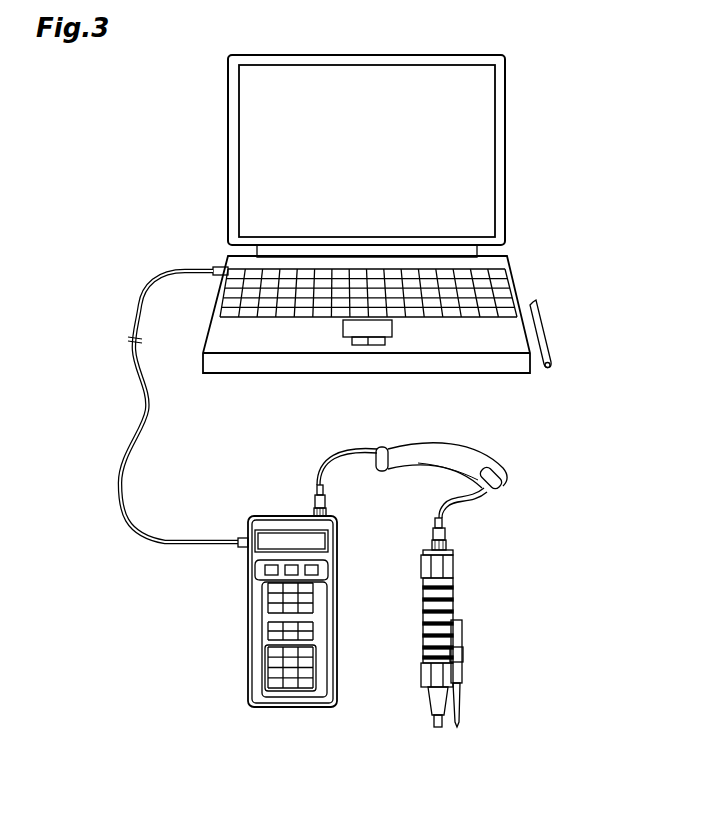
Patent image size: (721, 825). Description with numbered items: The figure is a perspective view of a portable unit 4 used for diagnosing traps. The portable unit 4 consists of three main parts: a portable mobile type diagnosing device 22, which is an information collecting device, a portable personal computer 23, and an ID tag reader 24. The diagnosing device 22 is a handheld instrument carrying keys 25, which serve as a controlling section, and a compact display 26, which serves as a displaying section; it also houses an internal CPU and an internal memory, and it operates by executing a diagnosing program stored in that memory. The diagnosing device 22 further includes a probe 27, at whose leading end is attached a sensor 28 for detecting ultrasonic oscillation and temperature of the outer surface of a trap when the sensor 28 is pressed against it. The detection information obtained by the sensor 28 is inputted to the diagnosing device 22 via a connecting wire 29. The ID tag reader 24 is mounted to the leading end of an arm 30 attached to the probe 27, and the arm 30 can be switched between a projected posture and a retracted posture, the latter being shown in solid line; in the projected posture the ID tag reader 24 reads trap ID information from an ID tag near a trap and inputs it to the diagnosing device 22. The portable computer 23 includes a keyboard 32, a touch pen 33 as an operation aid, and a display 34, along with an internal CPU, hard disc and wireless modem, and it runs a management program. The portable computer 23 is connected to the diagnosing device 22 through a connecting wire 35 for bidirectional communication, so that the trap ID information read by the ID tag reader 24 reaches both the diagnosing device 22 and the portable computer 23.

The portable unit 4 is at (479, 598).
The diagnosing device 22 is at (276, 596).
The portable computer 23 is at (329, 214).
The ID tag reader 24 is at (460, 700).
The keys 25 is at (318, 613).
The compact display 26 is at (318, 538).
The probe 27 is at (494, 668).
The sensor 28 is at (438, 727).
The connecting wire 29 is at (457, 443).
The arm 30 is at (486, 660).
The keyboard 32 is at (507, 297).
The touch pen 33 is at (548, 330).
The display 34 is at (488, 140).
The connecting wire 35 is at (122, 452).